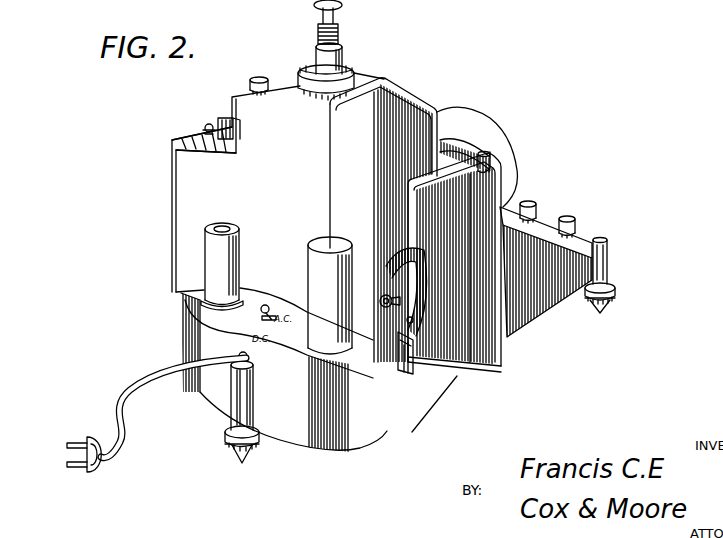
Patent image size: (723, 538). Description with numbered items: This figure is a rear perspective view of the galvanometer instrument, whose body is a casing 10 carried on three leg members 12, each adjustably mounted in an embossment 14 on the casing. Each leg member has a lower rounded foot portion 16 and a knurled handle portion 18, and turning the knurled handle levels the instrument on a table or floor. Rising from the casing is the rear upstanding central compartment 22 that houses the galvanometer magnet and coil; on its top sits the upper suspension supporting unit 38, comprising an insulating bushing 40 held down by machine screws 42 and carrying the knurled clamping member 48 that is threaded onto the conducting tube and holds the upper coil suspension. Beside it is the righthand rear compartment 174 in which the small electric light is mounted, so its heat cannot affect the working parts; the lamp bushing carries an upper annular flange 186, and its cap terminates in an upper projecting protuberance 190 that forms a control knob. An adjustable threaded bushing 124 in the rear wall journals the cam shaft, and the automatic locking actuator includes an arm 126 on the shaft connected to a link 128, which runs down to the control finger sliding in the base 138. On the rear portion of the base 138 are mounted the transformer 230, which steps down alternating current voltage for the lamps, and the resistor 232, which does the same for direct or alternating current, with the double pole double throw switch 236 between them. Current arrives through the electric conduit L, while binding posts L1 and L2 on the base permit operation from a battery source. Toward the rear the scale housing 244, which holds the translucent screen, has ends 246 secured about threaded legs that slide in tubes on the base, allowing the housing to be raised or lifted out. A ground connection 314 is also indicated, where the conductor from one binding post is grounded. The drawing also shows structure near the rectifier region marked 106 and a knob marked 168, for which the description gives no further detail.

The casing 10 is at (285, 99).
The leg member 12 is at (626, 288).
The embossment 14 is at (604, 258).
The rounded foot portion 16 is at (598, 308).
The knurled handle portion 18 is at (258, 436).
The rear upstanding central compartment 22 is at (393, 108).
The upper suspension supporting unit 38 is at (346, 53).
The insulating bushing 40 is at (318, 58).
The machine screw 42 is at (356, 72).
The knurled clamping member 48 is at (340, 27).
The rectifier stack 106 is at (460, 232).
The adjustable threaded bushing 124 is at (380, 296).
The arm 126 is at (412, 292).
The link 128 is at (414, 357).
The base 138 is at (420, 397).
The knob 168 is at (250, 76).
The righthand rear compartment 174 is at (182, 188).
The upper annular flange 186 is at (205, 133).
The upper projecting protuberance 190 is at (230, 115).
The transformer 230 is at (322, 268).
The resistor 232 is at (208, 268).
The double pole double throw switch 236 is at (267, 306).
The scale housing 244 is at (466, 140).
The end of scale housing 246 is at (488, 160).
The ground connection 314 is at (429, 413).
The electric conduit L is at (110, 453).
The binding post L1 is at (222, 330).
The binding post L2 is at (396, 269).